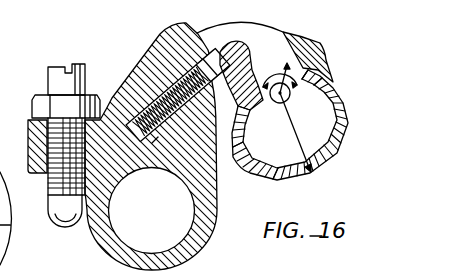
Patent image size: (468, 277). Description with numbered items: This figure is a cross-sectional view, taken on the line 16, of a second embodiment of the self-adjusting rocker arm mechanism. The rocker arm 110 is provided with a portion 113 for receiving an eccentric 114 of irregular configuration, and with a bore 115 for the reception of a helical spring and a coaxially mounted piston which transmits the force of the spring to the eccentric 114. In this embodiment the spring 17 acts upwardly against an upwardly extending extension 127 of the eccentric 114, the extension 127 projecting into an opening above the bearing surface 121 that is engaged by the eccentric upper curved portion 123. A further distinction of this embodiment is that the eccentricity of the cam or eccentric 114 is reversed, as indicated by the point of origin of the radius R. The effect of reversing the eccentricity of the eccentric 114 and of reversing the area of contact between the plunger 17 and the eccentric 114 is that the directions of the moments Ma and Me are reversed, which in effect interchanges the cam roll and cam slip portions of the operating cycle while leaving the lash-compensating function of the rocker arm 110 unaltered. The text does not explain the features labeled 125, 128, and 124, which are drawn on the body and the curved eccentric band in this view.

The rocker arm 110 is at (143, 52).
The portion for receiving eccentric 113 is at (175, 31).
The spring (plunger) 17 is at (143, 128).
The line 16— 16 is at (142, 137).
The bore 115 is at (162, 132).
The hook arm 125 is at (235, 146).
The lobe 128 is at (282, 30).
The extension 127 is at (285, 33).
The eccentric upper curved portion 123 is at (312, 68).
The bearing surface 121 is at (320, 82).
The hook band 124 is at (331, 153).
The eccentric 114 is at (279, 178).
The moment Ma is at (189, 42).
The moment Me is at (320, 87).
The radius R is at (293, 127).